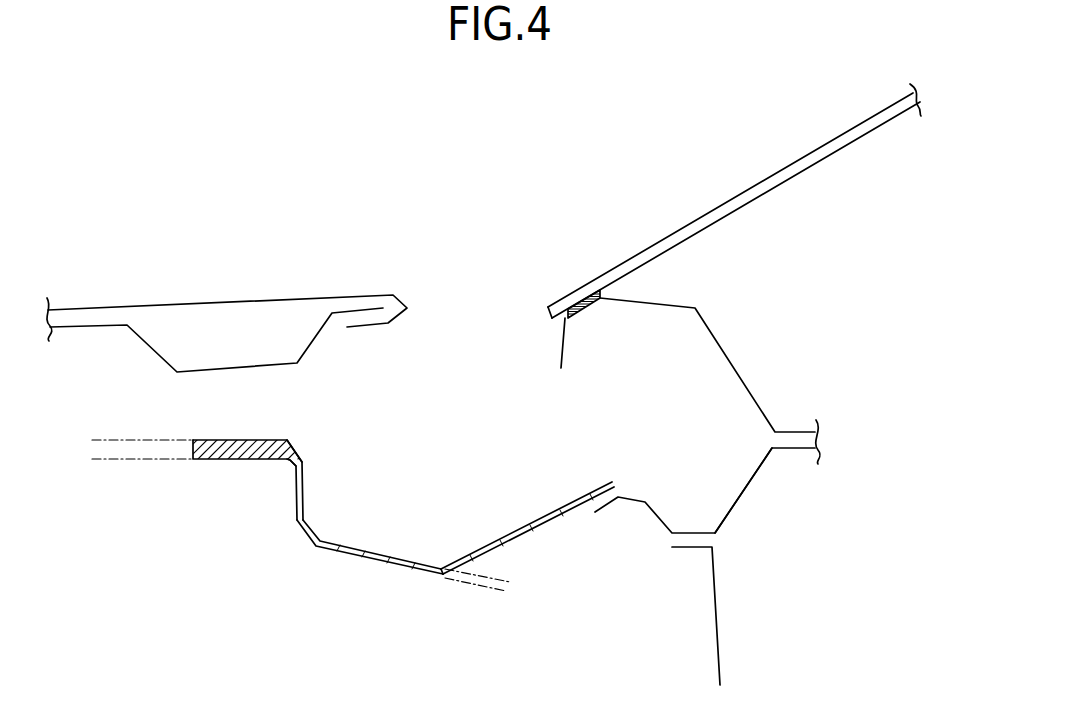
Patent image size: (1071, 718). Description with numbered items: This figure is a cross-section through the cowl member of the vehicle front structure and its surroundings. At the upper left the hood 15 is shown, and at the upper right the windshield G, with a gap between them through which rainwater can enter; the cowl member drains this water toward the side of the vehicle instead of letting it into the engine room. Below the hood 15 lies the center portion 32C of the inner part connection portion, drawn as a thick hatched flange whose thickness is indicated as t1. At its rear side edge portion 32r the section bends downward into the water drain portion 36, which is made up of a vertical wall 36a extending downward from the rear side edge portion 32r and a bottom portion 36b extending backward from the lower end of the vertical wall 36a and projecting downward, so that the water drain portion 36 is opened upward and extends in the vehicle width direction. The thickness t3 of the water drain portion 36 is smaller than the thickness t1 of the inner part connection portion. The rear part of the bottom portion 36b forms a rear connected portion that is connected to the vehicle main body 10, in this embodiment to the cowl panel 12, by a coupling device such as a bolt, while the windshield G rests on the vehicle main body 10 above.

The vehicle main body 10 is at (728, 531).
The cowl panel 12 is at (754, 470).
The hood 15 is at (255, 294).
The center portion of the inner part connection portion 32C is at (245, 439).
The rear side edge portion 32r is at (294, 452).
The water drain portion 36 is at (455, 471).
The vertical wall 36a is at (306, 497).
The bottom portion 36b is at (458, 556).
The windshield G is at (746, 187).
The thickness of the inner part connection portion t1 is at (127, 412).
The thickness of the water drain portion t3 is at (508, 548).